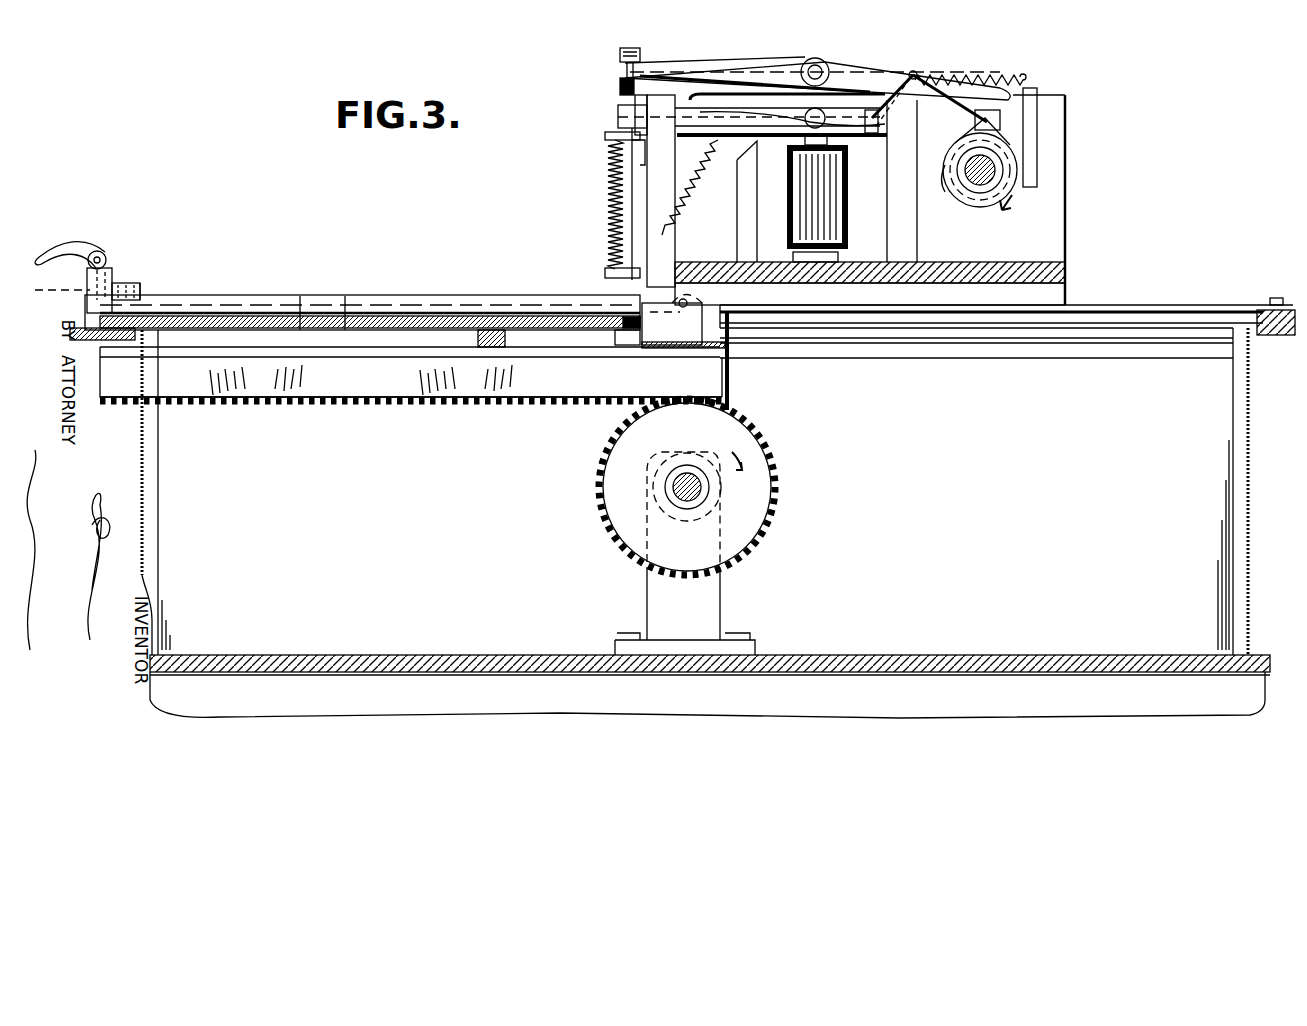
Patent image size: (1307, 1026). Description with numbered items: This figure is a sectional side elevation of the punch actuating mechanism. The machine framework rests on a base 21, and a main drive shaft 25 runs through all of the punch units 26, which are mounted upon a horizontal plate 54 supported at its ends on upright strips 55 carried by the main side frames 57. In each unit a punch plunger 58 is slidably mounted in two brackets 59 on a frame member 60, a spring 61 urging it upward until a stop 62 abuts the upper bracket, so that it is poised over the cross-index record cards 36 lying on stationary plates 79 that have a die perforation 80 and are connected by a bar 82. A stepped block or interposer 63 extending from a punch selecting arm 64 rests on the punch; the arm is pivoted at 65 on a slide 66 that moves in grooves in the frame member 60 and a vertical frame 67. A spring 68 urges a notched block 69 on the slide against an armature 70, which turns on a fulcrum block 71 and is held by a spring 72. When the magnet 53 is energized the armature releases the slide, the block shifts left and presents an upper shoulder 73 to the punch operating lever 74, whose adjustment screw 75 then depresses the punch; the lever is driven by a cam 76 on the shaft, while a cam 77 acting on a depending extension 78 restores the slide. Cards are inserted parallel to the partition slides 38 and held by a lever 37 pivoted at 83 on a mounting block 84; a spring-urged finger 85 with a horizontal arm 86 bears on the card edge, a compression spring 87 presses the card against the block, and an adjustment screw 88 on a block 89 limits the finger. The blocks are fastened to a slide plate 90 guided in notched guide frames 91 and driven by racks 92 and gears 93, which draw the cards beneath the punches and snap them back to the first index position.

The base 21 is at (1018, 660).
The main drive shaft 25 is at (995, 180).
The punch unit 26 is at (1006, 175).
The cross-index record card 36 is at (335, 306).
The lever 37 is at (455, 305).
The partition slide 38 is at (288, 306).
The magnet 53 is at (830, 210).
The horizontal plate 54 is at (1025, 275).
The upright strip 55 is at (1050, 294).
The main side frame 57 is at (172, 500).
The punch plunger 58 is at (612, 185).
The bracket 59 is at (606, 135).
The frame member 60 is at (660, 224).
The spring 61 is at (612, 206).
The stop 62 is at (628, 153).
The stepped block or interposer 63 is at (618, 108).
The punch selecting arm 64 is at (705, 125).
The pivot 65 is at (825, 118).
The slide 66 is at (872, 110).
The vertical frame 67 is at (908, 235).
The spring 68 is at (970, 66).
The notched block 69 is at (918, 73).
The armature 70 is at (852, 140).
The fulcrum block 71 is at (747, 222).
The spring 72 is at (700, 187).
The upper shoulder 73 is at (638, 95).
The punch operating lever 74 is at (768, 62).
The adjustment screw 75 is at (618, 86).
The cam 76 is at (983, 205).
The cam 77 is at (950, 180).
The depending extension 78 is at (1037, 157).
The stationary plate 79 is at (348, 328).
The die perforation 80 is at (615, 340).
The bar 82 is at (505, 340).
The pivot 83 is at (690, 300).
The mounting block 84 is at (735, 318).
The spring-urged finger 85 is at (135, 288).
The horizontal arm 86 is at (80, 248).
The compression spring 87 is at (85, 309).
The adjustment screw 88 is at (142, 290).
The block 89 is at (105, 290).
The slide plate 90 is at (730, 368).
The notched guide frame 91 is at (883, 345).
The rack 92 is at (403, 408).
The gear 93 is at (770, 510).